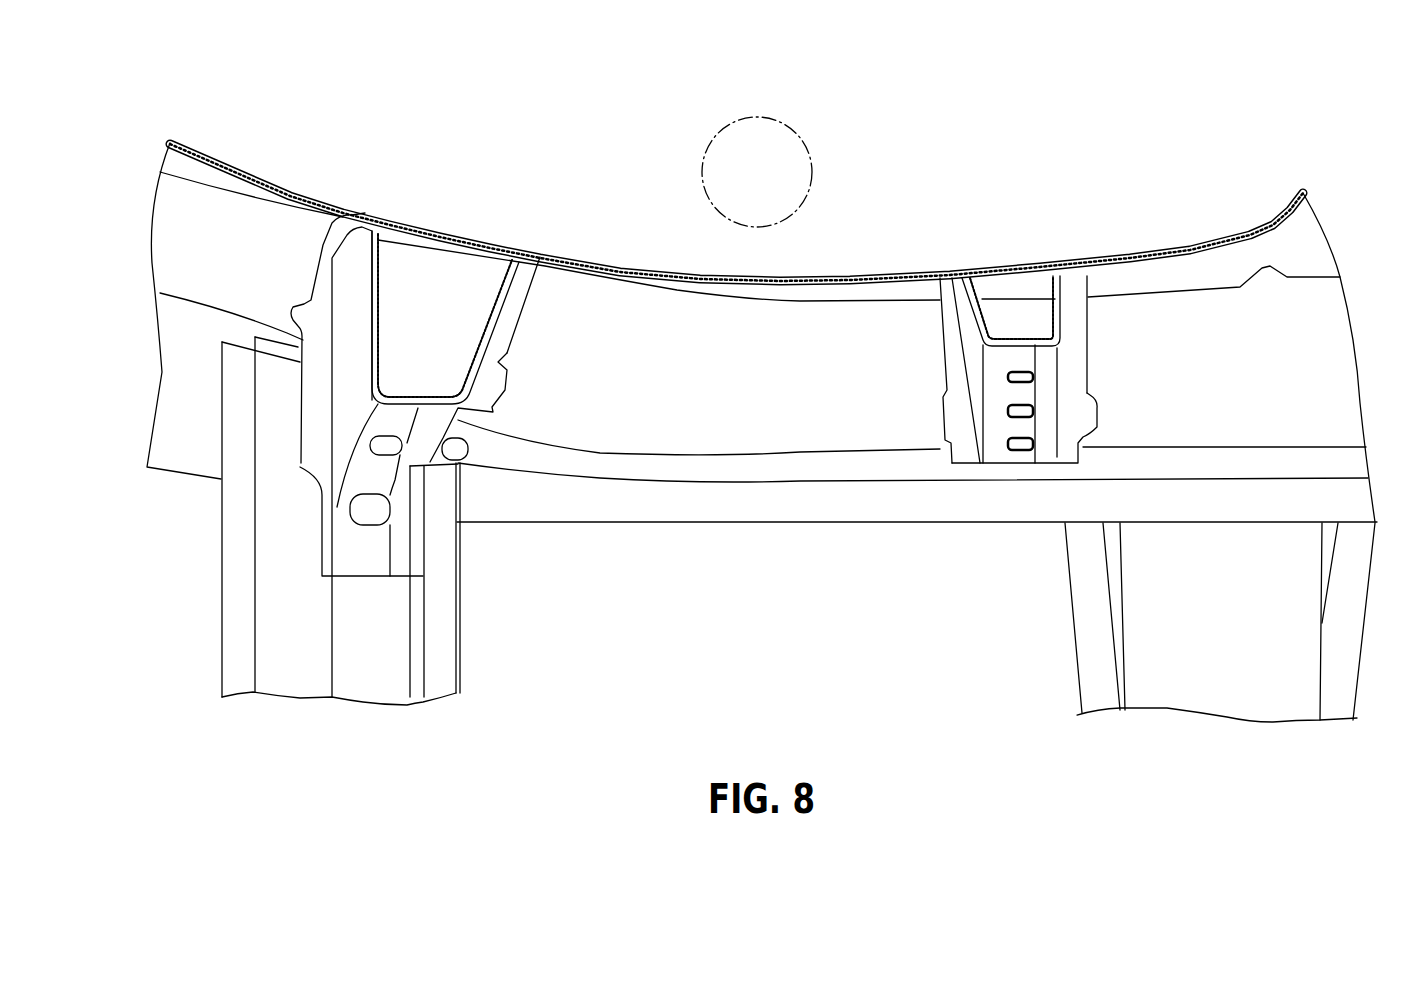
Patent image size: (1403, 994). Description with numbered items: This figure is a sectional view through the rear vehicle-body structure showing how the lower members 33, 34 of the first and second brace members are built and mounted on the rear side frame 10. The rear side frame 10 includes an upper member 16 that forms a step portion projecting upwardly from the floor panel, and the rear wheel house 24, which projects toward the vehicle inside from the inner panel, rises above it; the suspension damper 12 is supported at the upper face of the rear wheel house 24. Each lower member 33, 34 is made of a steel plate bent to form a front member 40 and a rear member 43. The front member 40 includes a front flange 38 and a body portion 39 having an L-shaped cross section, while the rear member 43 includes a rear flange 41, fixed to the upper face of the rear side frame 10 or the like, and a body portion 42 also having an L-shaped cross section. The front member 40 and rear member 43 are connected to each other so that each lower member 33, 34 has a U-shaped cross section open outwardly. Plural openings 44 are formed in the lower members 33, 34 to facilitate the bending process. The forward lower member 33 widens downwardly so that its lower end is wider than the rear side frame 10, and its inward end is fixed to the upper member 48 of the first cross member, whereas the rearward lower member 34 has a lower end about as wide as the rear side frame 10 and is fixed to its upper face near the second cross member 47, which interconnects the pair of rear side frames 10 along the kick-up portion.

The rear side frame 10 is at (792, 527).
The suspension damper 12 is at (803, 138).
The upper member 16 is at (678, 313).
The rear wheel house 24 is at (858, 277).
The lower member 33 is at (303, 283).
The lower member 34 is at (1002, 482).
The front flange 38 is at (327, 240).
The body portion 39 is at (378, 305).
The front member 40 is at (318, 462).
The rear flange 41 is at (520, 303).
The body portion 42 is at (477, 370).
The rear member 43 is at (487, 378).
The openings 44 is at (405, 457).
The second cross member 47 is at (1088, 663).
The upper member 48 is at (248, 630).